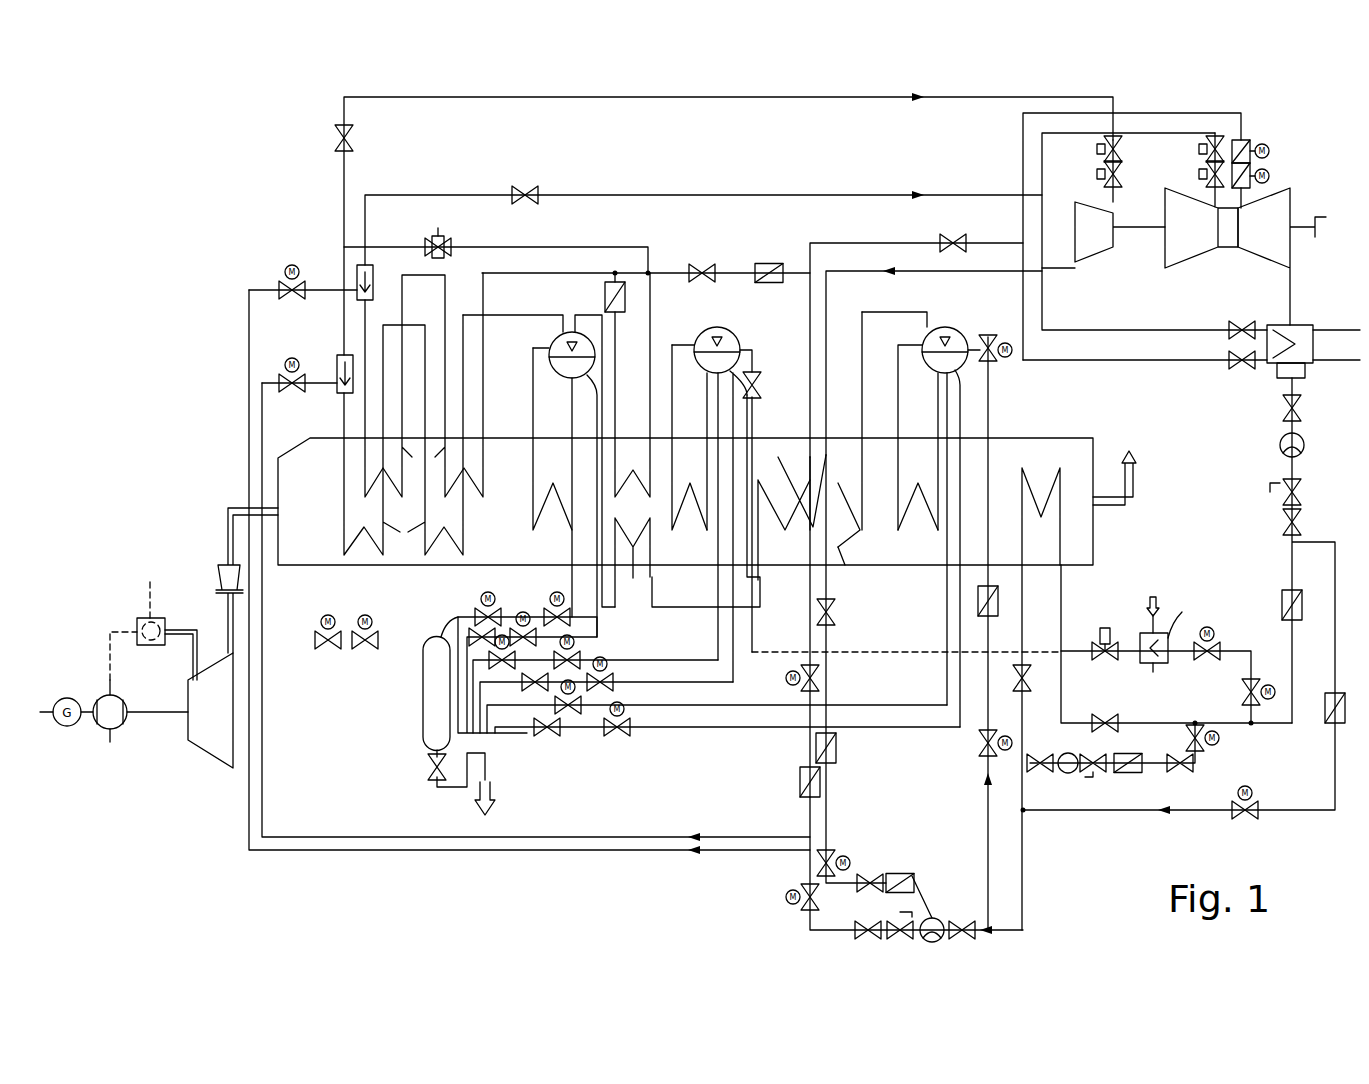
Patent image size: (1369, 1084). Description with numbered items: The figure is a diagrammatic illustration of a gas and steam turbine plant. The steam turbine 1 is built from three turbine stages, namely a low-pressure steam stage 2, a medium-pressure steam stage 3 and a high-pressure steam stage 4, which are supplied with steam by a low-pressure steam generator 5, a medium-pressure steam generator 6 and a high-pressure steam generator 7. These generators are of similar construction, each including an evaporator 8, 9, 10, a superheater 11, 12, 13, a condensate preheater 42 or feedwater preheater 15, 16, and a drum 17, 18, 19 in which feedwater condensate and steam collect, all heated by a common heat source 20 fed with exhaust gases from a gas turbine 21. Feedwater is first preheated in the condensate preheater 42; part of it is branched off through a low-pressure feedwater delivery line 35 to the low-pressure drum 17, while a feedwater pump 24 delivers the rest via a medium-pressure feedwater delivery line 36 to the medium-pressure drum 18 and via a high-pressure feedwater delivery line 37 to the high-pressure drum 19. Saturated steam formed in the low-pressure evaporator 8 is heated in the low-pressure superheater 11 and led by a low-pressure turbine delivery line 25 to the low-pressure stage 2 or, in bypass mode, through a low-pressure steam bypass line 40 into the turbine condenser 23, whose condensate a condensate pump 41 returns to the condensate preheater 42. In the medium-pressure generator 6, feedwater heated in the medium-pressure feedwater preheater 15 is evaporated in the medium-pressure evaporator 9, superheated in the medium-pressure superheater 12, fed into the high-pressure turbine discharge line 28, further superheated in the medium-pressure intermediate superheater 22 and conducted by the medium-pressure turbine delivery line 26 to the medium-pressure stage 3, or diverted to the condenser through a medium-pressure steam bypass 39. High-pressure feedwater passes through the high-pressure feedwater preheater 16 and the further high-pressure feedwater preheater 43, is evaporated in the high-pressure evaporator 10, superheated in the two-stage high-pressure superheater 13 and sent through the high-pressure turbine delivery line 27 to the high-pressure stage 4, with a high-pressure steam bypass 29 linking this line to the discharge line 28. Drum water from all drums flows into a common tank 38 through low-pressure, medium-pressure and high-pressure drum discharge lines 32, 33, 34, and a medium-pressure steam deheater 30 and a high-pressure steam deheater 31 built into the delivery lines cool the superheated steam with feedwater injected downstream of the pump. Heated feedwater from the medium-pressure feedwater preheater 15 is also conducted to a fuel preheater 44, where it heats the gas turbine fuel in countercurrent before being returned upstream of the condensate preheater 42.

The steam turbine 1 is at (1300, 152).
The low-pressure steam stage 2 is at (1270, 244).
The medium-pressure steam stage 3 is at (1197, 244).
The high-pressure steam stage 4 is at (1096, 244).
The low-pressure steam generator 5 is at (905, 537).
The medium-pressure steam generator 6 is at (697, 541).
The high-pressure steam generator 7 is at (443, 583).
The low-pressure evaporator 8 is at (898, 420).
The medium-pressure evaporator 9 is at (675, 473).
The high-pressure evaporator 10 is at (542, 469).
The low-pressure superheater 11 is at (845, 565).
The medium-pressure superheater 12 is at (622, 452).
The high-pressure superheater 13 is at (403, 440).
The medium-pressure feedwater preheater 15 is at (800, 497).
The high-pressure feedwater preheater 16 is at (797, 566).
The low-pressure drum 17 is at (944, 335).
The medium-pressure drum 18 is at (742, 346).
The high-pressure drum 19 is at (549, 349).
The heat source 20 is at (1082, 433).
The gas turbine 21 is at (228, 734).
The medium-pressure intermediate superheater 22 is at (424, 385).
The turbine condenser 23 is at (1316, 366).
The feedwater pump 24 is at (938, 918).
The low-pressure turbine delivery line 25 is at (902, 242).
The medium-pressure turbine delivery line 26 is at (750, 194).
The high-pressure turbine delivery line 27 is at (620, 96).
The high-pressure turbine discharge line 28 is at (827, 273).
The high-pressure steam bypass 29 is at (577, 246).
The medium-pressure steam deheater 30 is at (357, 268).
The high-pressure steam deheater 31 is at (338, 358).
The low-pressure drum discharge lines 32 is at (733, 727).
The medium-pressure drum discharge lines 33 is at (702, 662).
The high-pressure drum discharge lines 34 is at (598, 637).
The low-pressure feedwater delivery line 35 is at (988, 816).
The medium-pressure feedwater delivery line 36 is at (828, 812).
The high-pressure feedwater delivery line 37 is at (810, 821).
The common tank 38 is at (423, 704).
The medium-pressure steam bypass 39 is at (1106, 328).
The low-pressure steam bypass line 40 is at (1152, 361).
The condensate pump 41 is at (1303, 452).
The condensate preheater 42 is at (1060, 545).
The further high-pressure feedwater preheater 43 is at (633, 578).
The fuel preheater 44 is at (1170, 637).